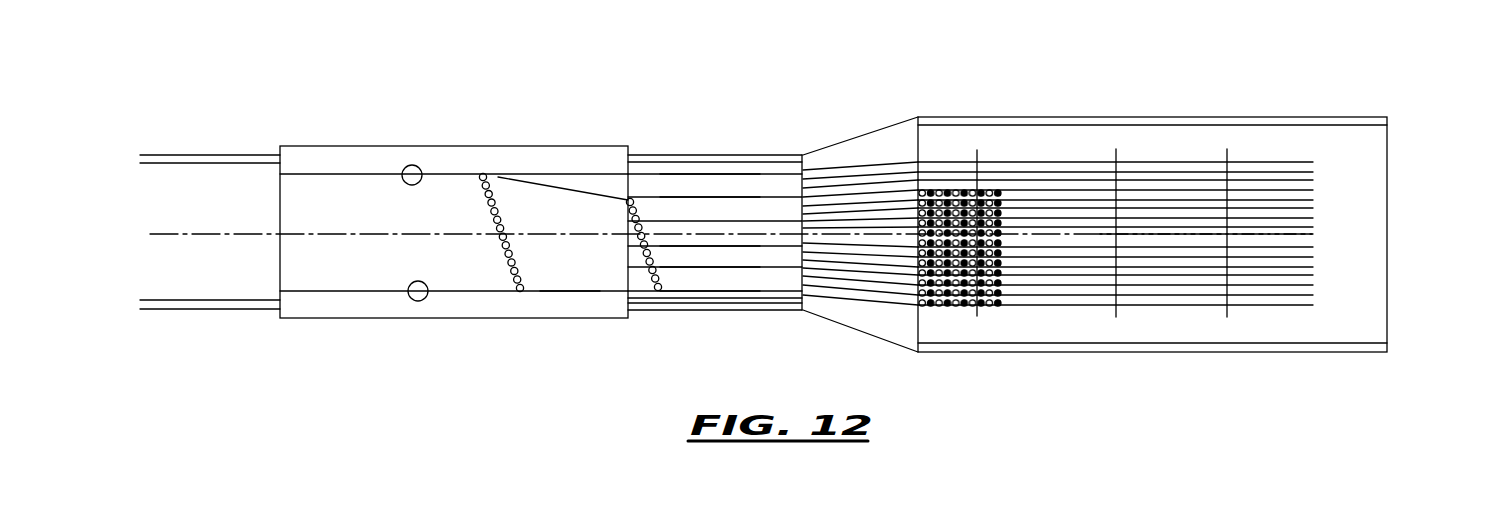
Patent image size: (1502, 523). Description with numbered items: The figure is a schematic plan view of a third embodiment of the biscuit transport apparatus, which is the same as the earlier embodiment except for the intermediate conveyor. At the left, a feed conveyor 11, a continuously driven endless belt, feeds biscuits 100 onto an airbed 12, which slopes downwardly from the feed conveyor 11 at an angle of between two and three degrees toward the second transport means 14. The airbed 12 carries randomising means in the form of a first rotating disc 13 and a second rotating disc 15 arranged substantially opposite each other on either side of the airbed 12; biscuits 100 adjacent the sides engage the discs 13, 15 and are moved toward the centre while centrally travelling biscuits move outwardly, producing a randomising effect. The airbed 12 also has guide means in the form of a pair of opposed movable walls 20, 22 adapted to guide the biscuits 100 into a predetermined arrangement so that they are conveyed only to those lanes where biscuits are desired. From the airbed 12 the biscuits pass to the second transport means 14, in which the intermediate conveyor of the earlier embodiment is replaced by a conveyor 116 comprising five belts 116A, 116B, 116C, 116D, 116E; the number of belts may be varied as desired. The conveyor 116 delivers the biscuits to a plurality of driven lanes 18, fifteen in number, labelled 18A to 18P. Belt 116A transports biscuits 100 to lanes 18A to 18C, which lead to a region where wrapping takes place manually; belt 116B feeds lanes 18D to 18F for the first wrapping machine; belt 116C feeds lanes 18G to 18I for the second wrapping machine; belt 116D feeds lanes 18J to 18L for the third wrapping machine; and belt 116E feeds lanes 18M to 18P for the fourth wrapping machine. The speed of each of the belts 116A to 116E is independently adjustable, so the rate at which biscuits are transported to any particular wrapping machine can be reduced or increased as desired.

The feed conveyor 11 is at (216, 187).
The airbed 12 is at (336, 160).
The first rotating disc 13 is at (403, 165).
The second rotating disc 15 is at (413, 302).
The movable wall 20 is at (552, 188).
The movable wall 22 is at (566, 288).
The biscuits 100 is at (512, 273).
The conveyor 116 is at (653, 183).
The belt 116A is at (697, 182).
The belt 116B is at (763, 208).
The belt 116C is at (742, 237).
The belt 116D is at (700, 255).
The belt 116E is at (689, 280).
The second transport means 14 is at (874, 125).
The lanes 18 is at (912, 172).
The lane 18A is at (1313, 163).
The lane 18C is at (1313, 180).
The lane 18D is at (1313, 190).
The lane 18F is at (1313, 218).
The lane 18G is at (1313, 235).
The lane 18I is at (1313, 247).
The lane 18J is at (1313, 257).
The lane 18L is at (1313, 275).
The lane 18M is at (1313, 285).
The lane 18P is at (1313, 305).